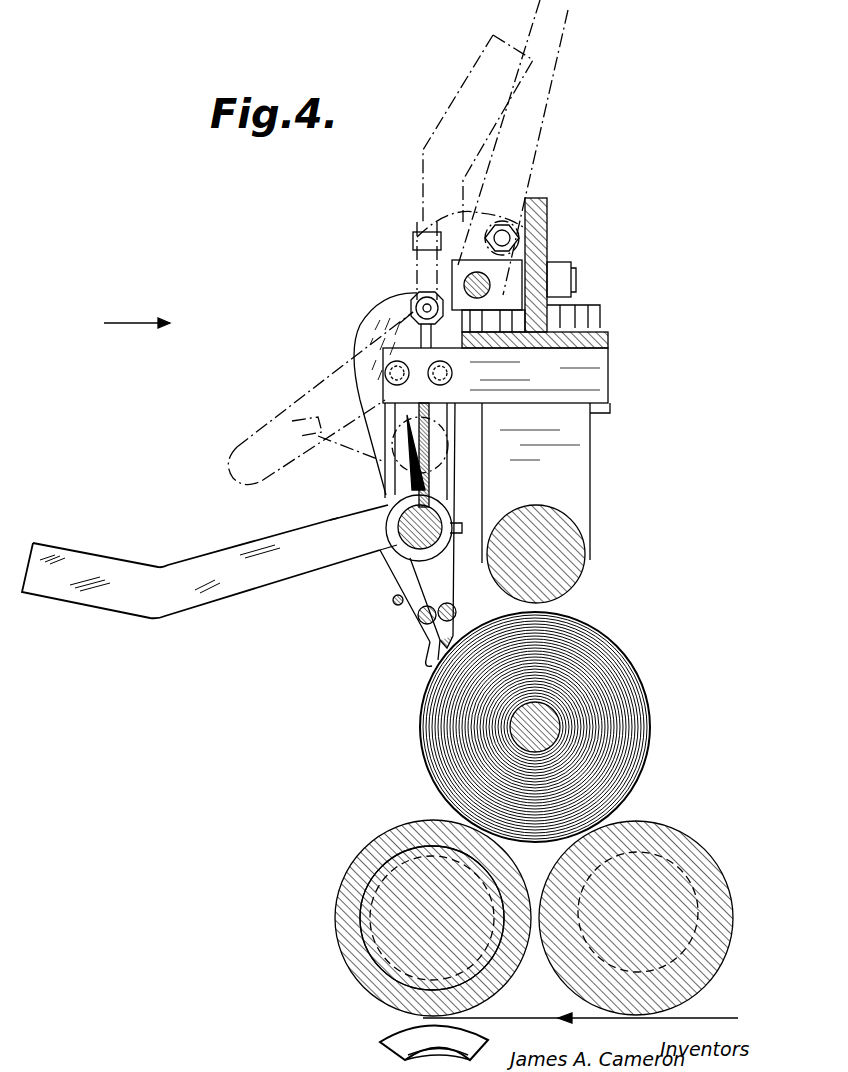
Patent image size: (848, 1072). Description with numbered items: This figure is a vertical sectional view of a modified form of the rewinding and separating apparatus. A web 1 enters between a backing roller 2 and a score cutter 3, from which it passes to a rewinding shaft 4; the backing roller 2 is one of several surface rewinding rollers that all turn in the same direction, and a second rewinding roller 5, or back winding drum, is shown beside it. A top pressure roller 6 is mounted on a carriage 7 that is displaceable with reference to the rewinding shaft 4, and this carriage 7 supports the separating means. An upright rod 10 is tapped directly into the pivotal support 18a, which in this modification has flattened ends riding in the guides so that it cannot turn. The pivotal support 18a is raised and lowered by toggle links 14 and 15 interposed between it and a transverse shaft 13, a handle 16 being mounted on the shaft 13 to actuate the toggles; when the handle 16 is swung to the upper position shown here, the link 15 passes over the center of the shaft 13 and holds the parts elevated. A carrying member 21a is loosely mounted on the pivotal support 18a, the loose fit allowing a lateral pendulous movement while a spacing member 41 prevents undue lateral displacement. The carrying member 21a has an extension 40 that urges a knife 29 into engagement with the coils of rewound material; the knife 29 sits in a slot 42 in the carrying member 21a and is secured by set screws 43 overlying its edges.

The web 1 is at (713, 1017).
The backing roller 2 is at (356, 977).
The score cutter 3 is at (392, 1030).
The rewinding shaft 4 is at (556, 720).
The second rewinding roller 5 is at (712, 882).
The top pressure roller 6 is at (585, 556).
The carriage 7 is at (590, 440).
The upright rod 10 is at (426, 440).
The transverse shaft 13 is at (460, 282).
The toggle link 14 is at (362, 321).
The toggle link 15 is at (428, 300).
The handle 16 is at (265, 442).
The pivotal support 18a is at (430, 525).
The carrying member 21a is at (358, 547).
The knife 29 is at (450, 635).
The extension 40 is at (108, 602).
The spacing member 41 is at (387, 512).
The slot 42 is at (420, 590).
The set screw 43 is at (432, 625).